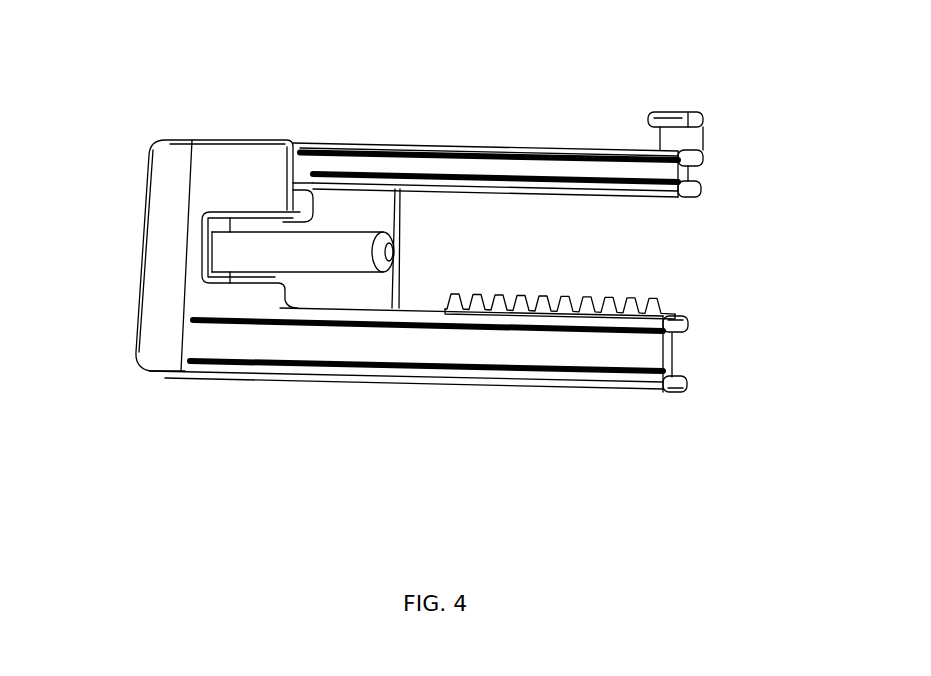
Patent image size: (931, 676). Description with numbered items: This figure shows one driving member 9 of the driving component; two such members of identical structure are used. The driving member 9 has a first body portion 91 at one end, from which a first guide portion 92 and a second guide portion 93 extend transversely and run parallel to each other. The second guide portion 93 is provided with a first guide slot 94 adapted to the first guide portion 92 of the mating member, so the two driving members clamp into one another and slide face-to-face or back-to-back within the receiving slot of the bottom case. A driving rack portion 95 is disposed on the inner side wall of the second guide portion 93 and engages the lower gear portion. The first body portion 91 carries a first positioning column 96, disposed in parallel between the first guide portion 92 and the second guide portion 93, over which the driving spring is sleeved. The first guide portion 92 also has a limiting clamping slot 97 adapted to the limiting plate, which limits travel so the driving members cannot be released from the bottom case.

The driving member 9 is at (439, 258).
The first body portion 91 is at (230, 177).
The first guide portion 92 is at (458, 170).
The second guide portion 93 is at (523, 337).
The first guide slot 94 is at (680, 350).
The driving rack portion 95 is at (565, 300).
The first positioning column 96 is at (290, 252).
The limiting clamping slot 97 is at (688, 143).